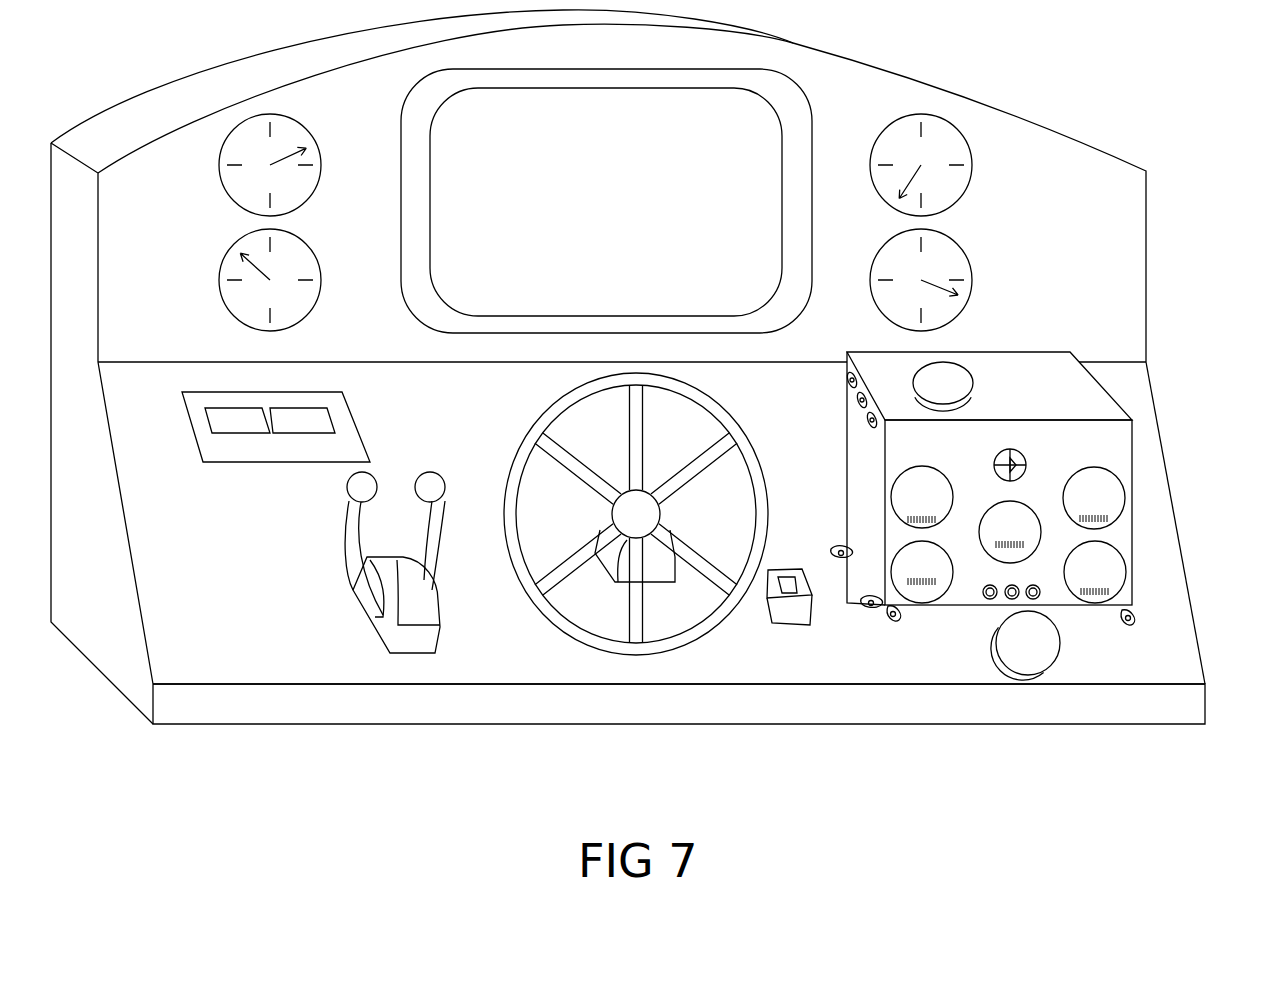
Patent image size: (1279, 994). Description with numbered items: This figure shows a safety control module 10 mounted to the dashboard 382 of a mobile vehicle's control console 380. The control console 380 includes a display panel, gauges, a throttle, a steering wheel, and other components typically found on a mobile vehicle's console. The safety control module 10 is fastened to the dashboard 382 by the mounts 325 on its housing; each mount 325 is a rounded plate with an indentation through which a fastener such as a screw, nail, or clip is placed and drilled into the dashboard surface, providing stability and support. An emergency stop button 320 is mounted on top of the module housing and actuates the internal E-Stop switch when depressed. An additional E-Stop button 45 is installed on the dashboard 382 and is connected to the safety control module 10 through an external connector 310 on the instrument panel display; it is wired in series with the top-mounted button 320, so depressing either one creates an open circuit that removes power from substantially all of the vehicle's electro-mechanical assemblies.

The safety control module 10 is at (847, 362).
The emergency stop button 320 is at (973, 385).
The control console 380 is at (1205, 765).
The dashboard 382 is at (188, 660).
The mounts 325 is at (852, 603).
The connectors 310 is at (988, 593).
The E-Stop button 45 is at (1040, 662).